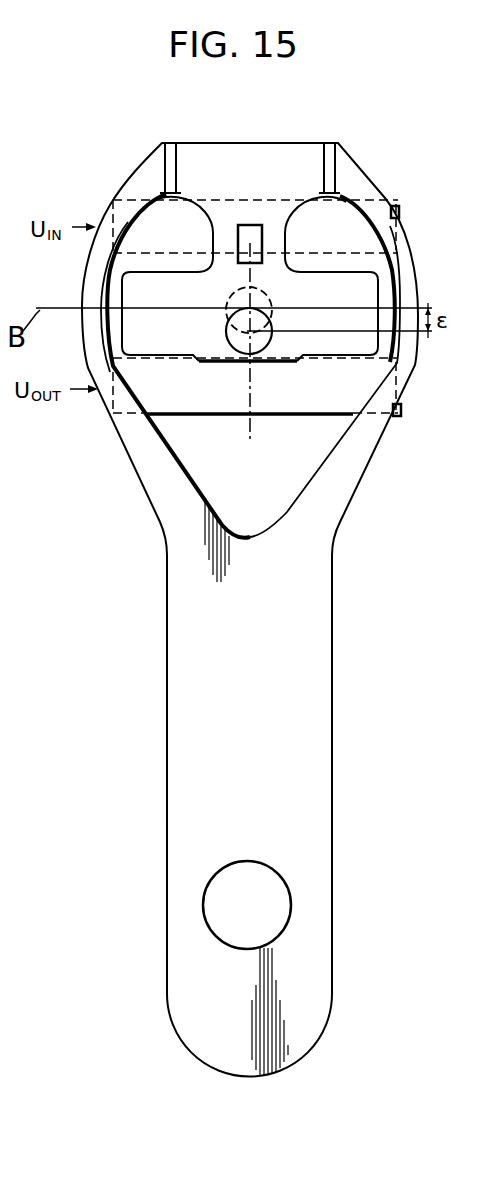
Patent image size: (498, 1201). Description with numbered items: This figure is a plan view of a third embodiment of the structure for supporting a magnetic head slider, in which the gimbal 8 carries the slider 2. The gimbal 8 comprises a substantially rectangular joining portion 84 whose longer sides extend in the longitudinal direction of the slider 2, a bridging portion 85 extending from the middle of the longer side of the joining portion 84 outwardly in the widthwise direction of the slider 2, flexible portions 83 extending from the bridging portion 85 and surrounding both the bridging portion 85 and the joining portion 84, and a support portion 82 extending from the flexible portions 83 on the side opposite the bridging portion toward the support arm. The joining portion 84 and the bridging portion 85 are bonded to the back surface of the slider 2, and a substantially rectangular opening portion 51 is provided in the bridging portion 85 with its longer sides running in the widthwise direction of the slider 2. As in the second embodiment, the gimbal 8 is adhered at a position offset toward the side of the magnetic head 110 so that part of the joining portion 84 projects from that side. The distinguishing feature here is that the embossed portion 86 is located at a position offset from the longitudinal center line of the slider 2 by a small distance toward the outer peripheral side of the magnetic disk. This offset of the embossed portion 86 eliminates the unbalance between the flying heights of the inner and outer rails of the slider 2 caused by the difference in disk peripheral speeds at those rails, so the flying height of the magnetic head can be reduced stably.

The slider 2 is at (162, 222).
The gimbal 8 is at (335, 691).
The support portion 82 is at (322, 770).
The flexible portions 83 is at (398, 418).
The joining portion 84 is at (396, 206).
The bridging portion 85 is at (215, 222).
The embossed portion 86 is at (231, 336).
The opening portion 51 is at (255, 226).
The magnetic head 110 is at (400, 214).